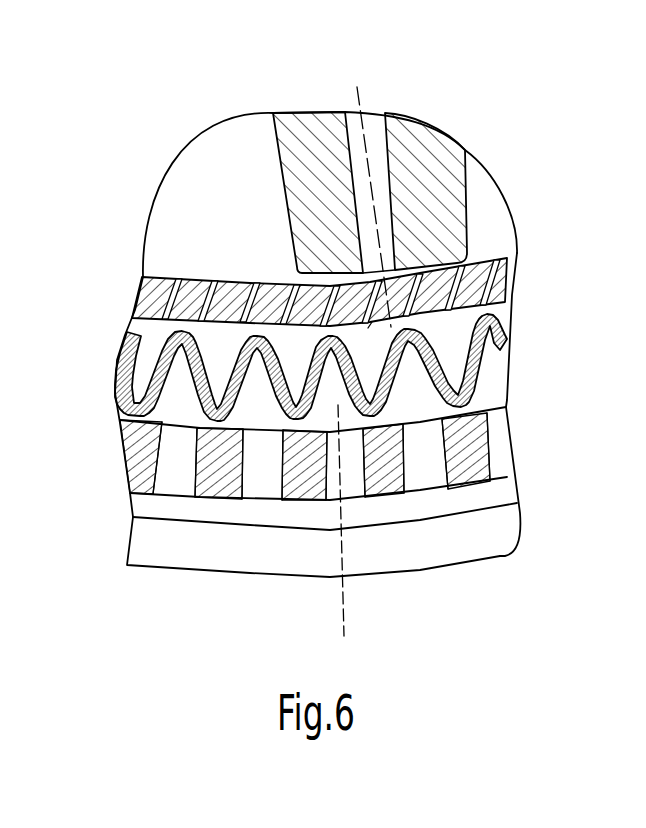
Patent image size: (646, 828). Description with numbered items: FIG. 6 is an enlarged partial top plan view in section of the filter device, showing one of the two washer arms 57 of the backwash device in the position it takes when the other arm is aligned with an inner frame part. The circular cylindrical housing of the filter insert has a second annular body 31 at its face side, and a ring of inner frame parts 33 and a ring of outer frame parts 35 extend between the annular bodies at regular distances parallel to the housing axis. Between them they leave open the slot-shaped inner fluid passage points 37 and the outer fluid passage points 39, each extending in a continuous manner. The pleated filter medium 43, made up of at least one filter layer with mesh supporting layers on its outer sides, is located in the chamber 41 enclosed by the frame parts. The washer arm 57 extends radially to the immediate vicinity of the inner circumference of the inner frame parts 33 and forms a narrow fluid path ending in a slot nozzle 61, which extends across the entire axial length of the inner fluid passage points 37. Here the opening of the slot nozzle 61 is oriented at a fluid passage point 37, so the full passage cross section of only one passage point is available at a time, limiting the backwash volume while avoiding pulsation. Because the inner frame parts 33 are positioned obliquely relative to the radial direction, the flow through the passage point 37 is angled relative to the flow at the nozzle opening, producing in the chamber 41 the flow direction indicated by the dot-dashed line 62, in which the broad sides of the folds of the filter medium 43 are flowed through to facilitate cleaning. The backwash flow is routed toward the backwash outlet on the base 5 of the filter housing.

The base 5 is at (6, 468).
The second annular body 31 is at (17, 585).
The inner frame parts 33 is at (206, 298).
The outer frame parts 35 is at (140, 447).
The inner fluid passage points 37 is at (168, 300).
The outer fluid passage points 39 is at (497, 445).
The chamber 41 is at (150, 347).
The filter medium 43 is at (115, 372).
The washer arm 57 is at (420, 160).
The slot nozzle 61 is at (388, 268).
The dot-dashed line 62 is at (368, 328).